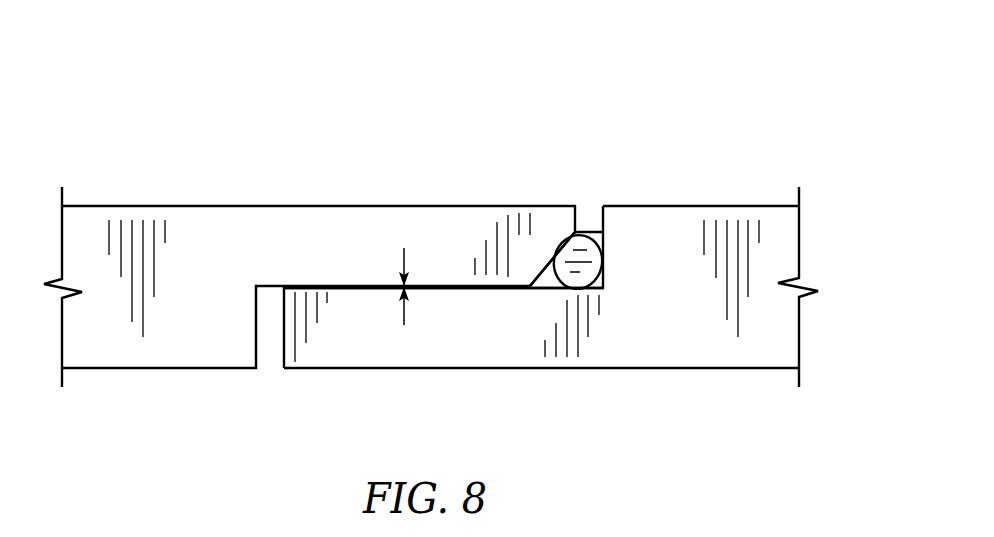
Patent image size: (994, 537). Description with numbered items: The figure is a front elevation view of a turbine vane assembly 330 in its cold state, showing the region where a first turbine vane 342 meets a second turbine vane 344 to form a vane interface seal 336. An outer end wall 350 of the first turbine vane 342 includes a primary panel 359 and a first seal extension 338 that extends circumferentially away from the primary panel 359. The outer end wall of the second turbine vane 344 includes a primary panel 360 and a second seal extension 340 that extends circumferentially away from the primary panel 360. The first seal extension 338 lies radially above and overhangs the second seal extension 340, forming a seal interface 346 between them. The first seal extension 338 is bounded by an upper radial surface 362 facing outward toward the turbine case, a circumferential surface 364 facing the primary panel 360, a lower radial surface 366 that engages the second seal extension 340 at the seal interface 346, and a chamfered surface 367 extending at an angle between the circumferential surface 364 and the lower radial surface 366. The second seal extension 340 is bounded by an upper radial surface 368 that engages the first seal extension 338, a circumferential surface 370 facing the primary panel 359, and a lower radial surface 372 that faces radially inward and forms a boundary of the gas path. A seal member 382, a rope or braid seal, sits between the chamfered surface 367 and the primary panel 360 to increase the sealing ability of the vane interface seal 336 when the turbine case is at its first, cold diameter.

The turbine vane assembly 330 is at (648, 140).
The vane interface seal 336 is at (382, 88).
The first seal extension 338 is at (295, 213).
The second seal extension 340 is at (425, 368).
The first turbine vane 342 is at (198, 120).
The second turbine vane 344 is at (690, 415).
The seal interface 346 is at (404, 248).
The outer end wall 350 is at (163, 148).
The primary panel 359 is at (210, 233).
The primary panel 360 is at (714, 353).
The upper radial surface 362 is at (413, 206).
The circumferential surface 364 is at (603, 232).
The lower radial surface 366 is at (413, 286).
The chamfered surface 367 is at (551, 264).
The upper radial surface 368 is at (473, 287).
The circumferential surface 370 is at (283, 352).
The lower radial surface 372 is at (358, 370).
The seal member 382 is at (588, 215).